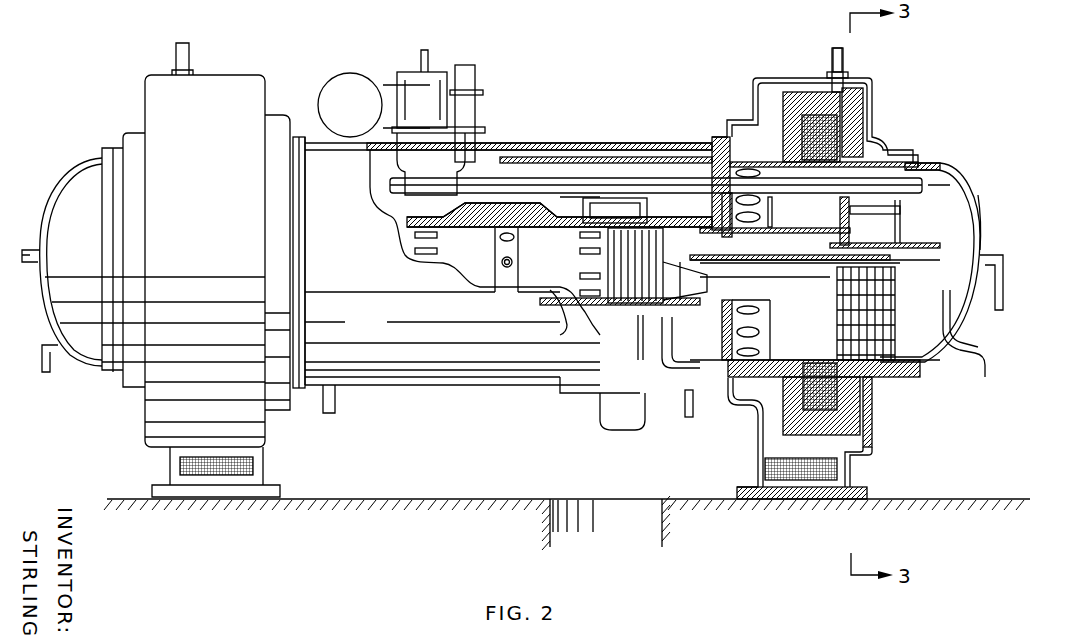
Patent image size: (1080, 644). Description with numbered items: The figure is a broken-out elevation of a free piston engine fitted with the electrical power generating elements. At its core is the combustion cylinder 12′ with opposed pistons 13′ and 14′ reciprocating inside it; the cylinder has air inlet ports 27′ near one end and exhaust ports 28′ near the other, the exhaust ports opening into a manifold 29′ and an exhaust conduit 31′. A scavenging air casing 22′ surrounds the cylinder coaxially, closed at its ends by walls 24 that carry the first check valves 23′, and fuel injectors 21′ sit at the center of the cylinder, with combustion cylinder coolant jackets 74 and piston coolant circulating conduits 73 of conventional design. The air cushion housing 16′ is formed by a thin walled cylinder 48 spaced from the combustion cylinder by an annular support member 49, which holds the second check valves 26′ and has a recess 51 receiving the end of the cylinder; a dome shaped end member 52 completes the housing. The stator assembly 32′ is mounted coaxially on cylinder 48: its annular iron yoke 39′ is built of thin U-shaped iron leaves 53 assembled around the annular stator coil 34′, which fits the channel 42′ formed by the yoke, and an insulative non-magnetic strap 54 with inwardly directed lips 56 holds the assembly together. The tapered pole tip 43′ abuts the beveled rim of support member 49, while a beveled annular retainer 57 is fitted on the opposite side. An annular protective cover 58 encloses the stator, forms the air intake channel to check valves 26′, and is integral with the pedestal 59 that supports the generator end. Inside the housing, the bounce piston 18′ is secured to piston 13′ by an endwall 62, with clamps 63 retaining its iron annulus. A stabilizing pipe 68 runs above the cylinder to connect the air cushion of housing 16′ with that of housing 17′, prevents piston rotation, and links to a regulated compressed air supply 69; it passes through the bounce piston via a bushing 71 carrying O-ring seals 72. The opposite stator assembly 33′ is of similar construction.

The stator assembly 33′ is at (229, 58).
The air cushion housing 17′ is at (43, 187).
The regulated compressed air supply 69 is at (443, 73).
The fuel injectors 21′ is at (513, 167).
The stabilizing pipe 68 is at (537, 165).
The manifold 29′ is at (593, 197).
The walls 24 is at (720, 168).
The combustion cylinder coolant jackets 74 is at (630, 215).
The bushing 71 is at (813, 178).
The clamps 63 is at (840, 197).
The endwall 62 is at (849, 213).
The O-ring seals 72 is at (880, 213).
The piston coolant circulating conduits 73 is at (913, 250).
The channel 42′ is at (807, 130).
The recess 51 is at (777, 167).
The lips 56 is at (778, 98).
The insulative non-magnetic strap 54 is at (810, 92).
The annular protective cover 58 is at (862, 78).
The stator assembly 32′ is at (882, 89).
The iron leaves 53 is at (862, 114).
The air cushion housing 16′ is at (982, 189).
The dome shaped end member 52 is at (980, 218).
The piston 14′ is at (400, 243).
The combustion cylinder 12′ is at (443, 223).
The exhaust ports 28′ is at (578, 250).
The piston 13′ is at (612, 275).
The air inlet ports 27′ is at (427, 254).
The scavenging air casing 22′ is at (378, 333).
The second check valves 26′ is at (745, 308).
The first check valves 23′ is at (722, 328).
The thin walled cylinder 48 is at (780, 358).
The tapered pole tip 43′ is at (792, 362).
The bounce piston 18′ is at (906, 303).
The exhaust conduit 31′ is at (580, 423).
The annular support member 49 is at (752, 378).
The annular retainer 57 is at (897, 387).
The annular iron yoke 39′ is at (876, 413).
The annular stator coil 34′ is at (858, 452).
The pedestal 59 is at (850, 468).